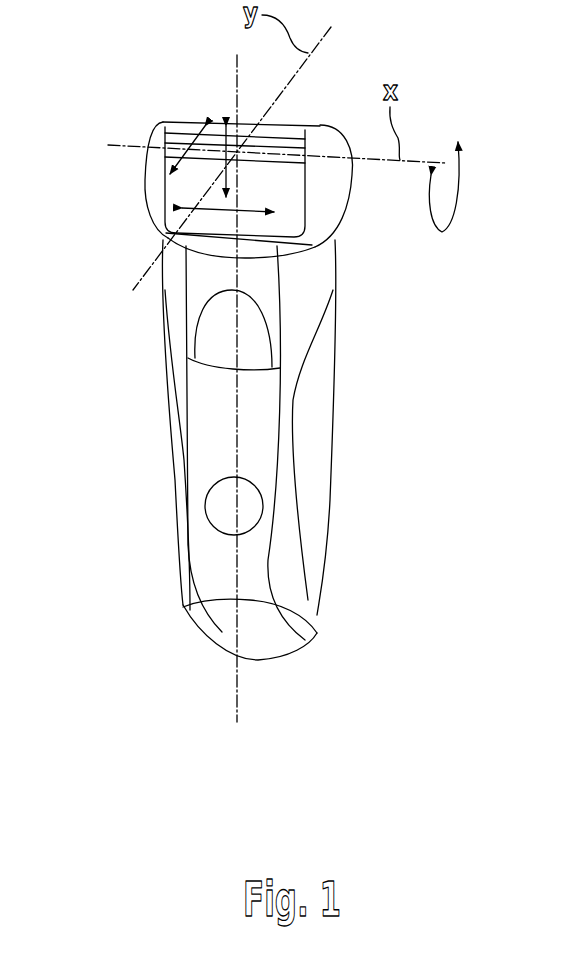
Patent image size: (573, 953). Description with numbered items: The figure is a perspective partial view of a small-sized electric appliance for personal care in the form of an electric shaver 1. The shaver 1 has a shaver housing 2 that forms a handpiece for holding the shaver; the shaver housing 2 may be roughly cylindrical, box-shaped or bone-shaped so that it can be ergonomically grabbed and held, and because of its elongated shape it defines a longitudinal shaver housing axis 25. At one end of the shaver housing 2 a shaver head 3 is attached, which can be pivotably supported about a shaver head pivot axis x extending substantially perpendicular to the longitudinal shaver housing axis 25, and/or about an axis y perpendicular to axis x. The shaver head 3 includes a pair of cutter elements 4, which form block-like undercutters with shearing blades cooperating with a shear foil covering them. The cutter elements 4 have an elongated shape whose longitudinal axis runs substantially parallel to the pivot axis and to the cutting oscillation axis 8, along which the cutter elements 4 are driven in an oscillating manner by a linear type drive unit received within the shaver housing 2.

The shaver 1 is at (270, 349).
The shaver housing 2 is at (339, 455).
The shaver head 3 is at (220, 148).
The cutter elements 4 is at (152, 137).
The cutting oscillation axis 8 is at (247, 210).
The longitudinal shaver housing axis 25 is at (237, 705).